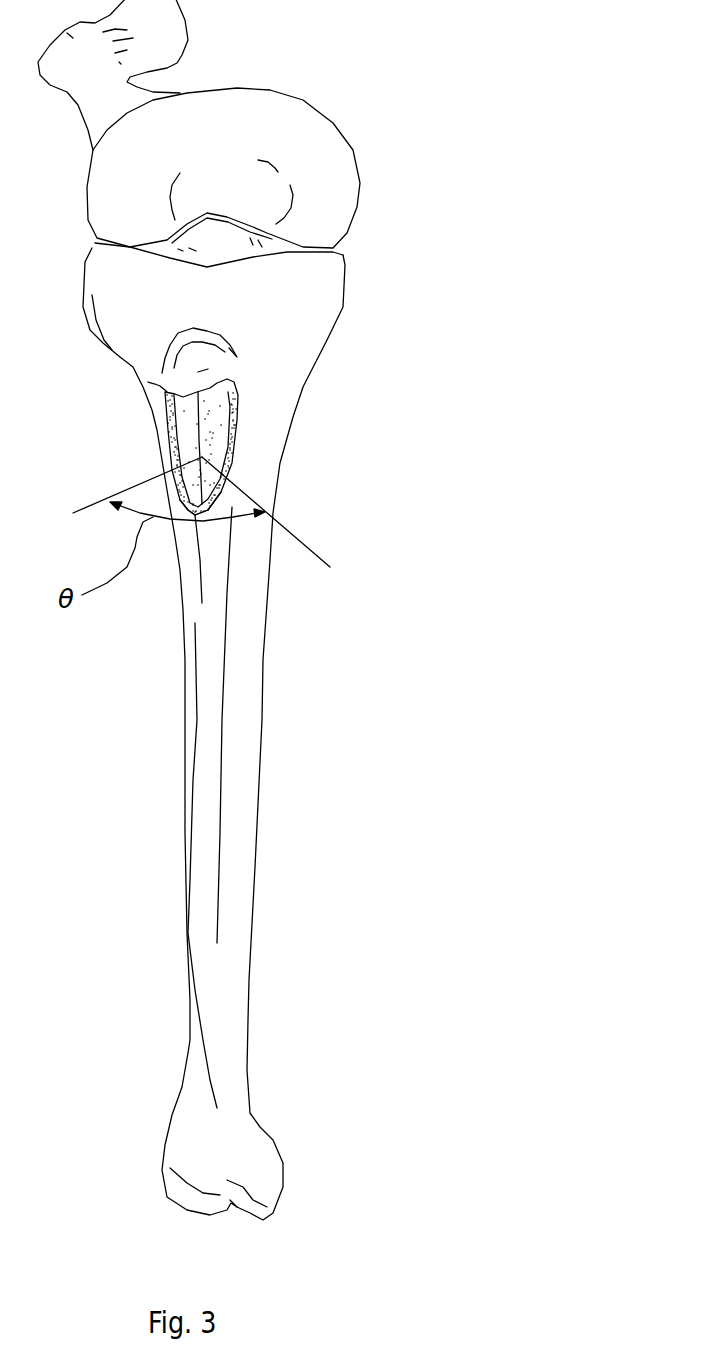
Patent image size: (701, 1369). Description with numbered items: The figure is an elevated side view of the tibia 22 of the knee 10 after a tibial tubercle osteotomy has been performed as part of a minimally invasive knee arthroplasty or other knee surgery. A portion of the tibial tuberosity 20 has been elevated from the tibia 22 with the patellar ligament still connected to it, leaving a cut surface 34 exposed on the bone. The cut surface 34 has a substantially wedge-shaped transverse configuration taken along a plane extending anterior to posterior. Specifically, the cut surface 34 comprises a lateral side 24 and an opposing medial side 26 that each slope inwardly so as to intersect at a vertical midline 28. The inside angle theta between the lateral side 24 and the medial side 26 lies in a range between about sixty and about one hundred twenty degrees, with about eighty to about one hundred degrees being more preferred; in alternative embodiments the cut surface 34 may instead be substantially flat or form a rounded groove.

The knee 10 is at (423, 182).
The tibial tuberosity 20 is at (200, 373).
The tibia 22 is at (250, 668).
The lateral side 24 is at (177, 438).
The medial side 26 is at (223, 403).
The vertical midline 28 is at (233, 497).
The cut surface 34 is at (215, 438).